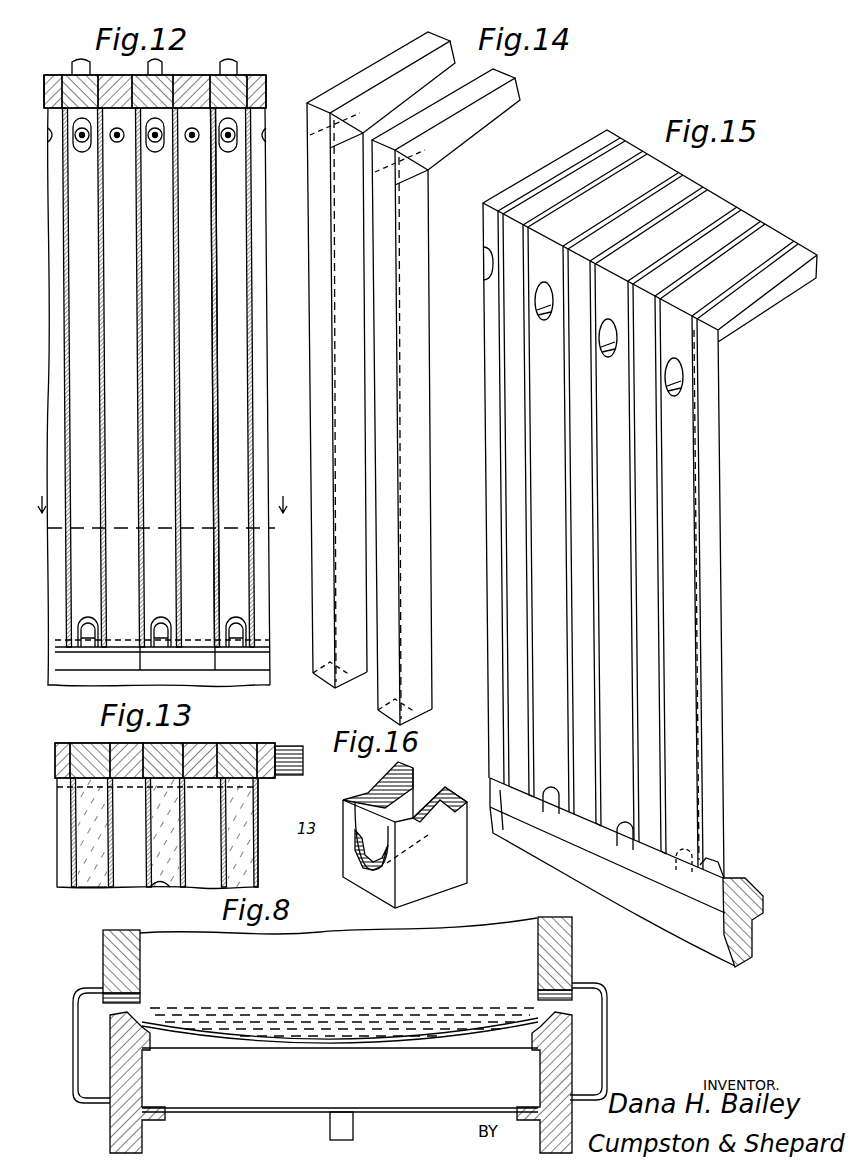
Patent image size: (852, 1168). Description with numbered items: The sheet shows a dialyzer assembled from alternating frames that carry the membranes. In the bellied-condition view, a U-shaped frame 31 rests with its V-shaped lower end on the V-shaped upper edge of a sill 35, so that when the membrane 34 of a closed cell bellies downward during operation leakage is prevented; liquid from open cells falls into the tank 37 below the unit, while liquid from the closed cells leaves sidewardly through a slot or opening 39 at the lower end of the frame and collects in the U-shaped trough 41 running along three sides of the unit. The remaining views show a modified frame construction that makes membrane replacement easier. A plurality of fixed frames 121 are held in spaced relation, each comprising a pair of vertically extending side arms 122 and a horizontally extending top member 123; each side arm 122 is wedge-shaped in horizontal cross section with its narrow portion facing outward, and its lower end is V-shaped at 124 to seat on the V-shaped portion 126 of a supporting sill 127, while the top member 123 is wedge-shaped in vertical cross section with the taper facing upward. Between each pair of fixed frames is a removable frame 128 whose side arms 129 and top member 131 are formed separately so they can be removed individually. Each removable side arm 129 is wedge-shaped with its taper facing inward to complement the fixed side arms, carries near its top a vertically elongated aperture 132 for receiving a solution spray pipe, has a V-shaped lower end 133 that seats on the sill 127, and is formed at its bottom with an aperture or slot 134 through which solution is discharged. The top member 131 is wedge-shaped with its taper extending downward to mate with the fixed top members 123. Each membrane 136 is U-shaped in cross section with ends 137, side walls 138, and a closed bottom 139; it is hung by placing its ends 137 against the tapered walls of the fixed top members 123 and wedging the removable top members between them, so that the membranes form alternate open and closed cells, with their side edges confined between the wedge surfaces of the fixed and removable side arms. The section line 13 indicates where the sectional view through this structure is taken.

In FIG. 12, the section line 13— 13 is at (171, 517).
In FIG. 8, the U-shaped frame 31 is at (110, 962).
In FIG. 8, the membrane 34 is at (449, 1040).
In FIG. 8, the sill 35 is at (145, 1043).
In FIG. 8, the tank 37 is at (438, 1100).
In FIG. 8, the slot or opening 39 is at (140, 1003).
In FIG. 8, the U-shaped trough 41 is at (90, 1088).
In FIG. 12, the fixed frame 121 is at (200, 297).
In FIG. 13, the fixed frame 121 is at (203, 743).
In FIG. 14, the fixed frame 121 is at (400, 532).
In FIG. 15, the fixed frame 121 is at (574, 760).
In FIG. 14, the side arm 122 is at (388, 405).
In FIG. 12, the top member 123 is at (117, 77).
In FIG. 14, the top member 123 is at (512, 117).
In FIG. 15, the top member 123 is at (750, 231).
In FIG. 14, the V-shaped lower end 124 is at (362, 674).
In FIG. 12, the V-shaped portion 126 is at (180, 662).
In FIG. 13, the V-shaped portion 126 is at (292, 776).
In FIG. 15, the V-shaped portion 126 is at (717, 898).
In FIG. 15, the supporting sill 127 is at (772, 934).
In FIG. 13, the removable frame 128 is at (90, 742).
In FIG. 15, the removable frame 128 is at (703, 562).
In FIG. 16, the removable frame 128 is at (449, 878).
In FIG. 15, the removable side arm 129 is at (708, 491).
In FIG. 12, the top member 131 is at (65, 74).
In FIG. 15, the top member 131 is at (723, 210).
In FIG. 12, the aperture 132 is at (85, 150).
In FIG. 15, the aperture 132 is at (614, 311).
In FIG. 15, the V-shaped lower end 133 is at (727, 881).
In FIG. 16, the V-shaped lower end 133 is at (437, 830).
In FIG. 12, the aperture or slot 134 is at (160, 625).
In FIG. 15, the aperture or slot 134 is at (613, 821).
In FIG. 16, the aperture or slot 134 is at (365, 846).
In FIG. 12, the membrane 136 is at (230, 237).
In FIG. 12, the end 137 is at (203, 76).
In FIG. 15, the end 137 is at (682, 259).
In FIG. 12, the side wall 138 is at (217, 412).
In FIG. 13, the side wall 138 is at (148, 886).
In FIG. 15, the side wall 138 is at (634, 616).
In FIG. 12, the closed bottom 139 is at (237, 648).
In FIG. 13, the closed bottom 139 is at (246, 868).
In FIG. 15, the closed bottom 139 is at (547, 820).